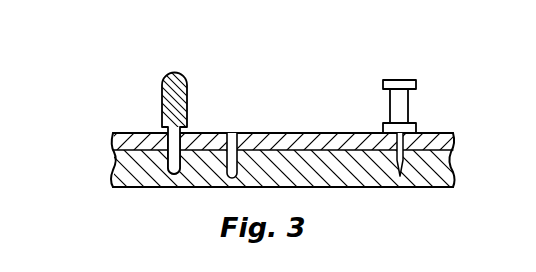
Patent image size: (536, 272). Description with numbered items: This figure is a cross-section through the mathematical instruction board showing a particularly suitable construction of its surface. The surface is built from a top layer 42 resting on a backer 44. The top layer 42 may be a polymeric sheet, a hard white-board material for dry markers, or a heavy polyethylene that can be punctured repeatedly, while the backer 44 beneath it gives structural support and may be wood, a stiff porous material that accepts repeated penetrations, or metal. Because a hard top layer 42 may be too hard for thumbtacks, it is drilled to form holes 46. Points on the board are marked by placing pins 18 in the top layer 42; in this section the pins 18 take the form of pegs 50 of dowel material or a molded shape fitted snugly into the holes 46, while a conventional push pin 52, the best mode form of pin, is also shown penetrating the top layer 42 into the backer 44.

The pins 18 is at (265, 114).
The top layer 42 is at (113, 140).
The backer 44 is at (116, 165).
The holes 46 is at (198, 133).
The pegs 50 is at (188, 83).
The push pins 52 is at (415, 81).